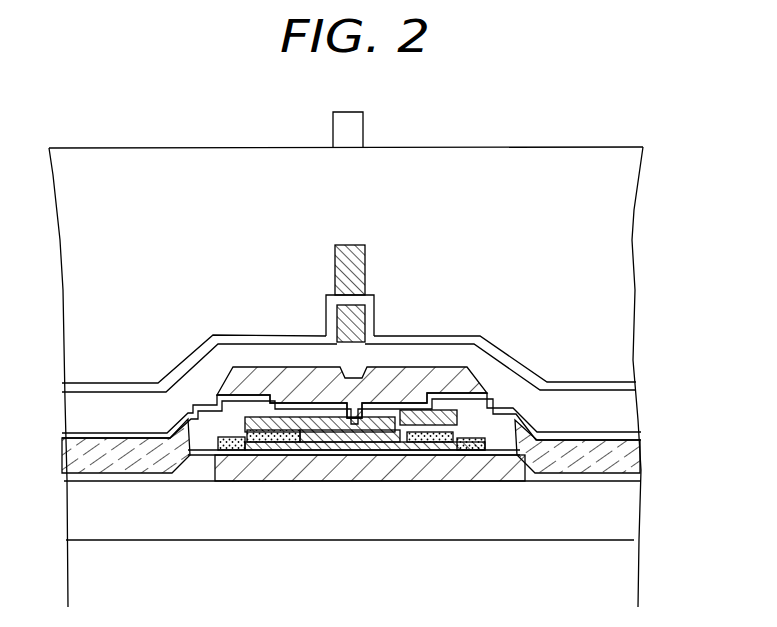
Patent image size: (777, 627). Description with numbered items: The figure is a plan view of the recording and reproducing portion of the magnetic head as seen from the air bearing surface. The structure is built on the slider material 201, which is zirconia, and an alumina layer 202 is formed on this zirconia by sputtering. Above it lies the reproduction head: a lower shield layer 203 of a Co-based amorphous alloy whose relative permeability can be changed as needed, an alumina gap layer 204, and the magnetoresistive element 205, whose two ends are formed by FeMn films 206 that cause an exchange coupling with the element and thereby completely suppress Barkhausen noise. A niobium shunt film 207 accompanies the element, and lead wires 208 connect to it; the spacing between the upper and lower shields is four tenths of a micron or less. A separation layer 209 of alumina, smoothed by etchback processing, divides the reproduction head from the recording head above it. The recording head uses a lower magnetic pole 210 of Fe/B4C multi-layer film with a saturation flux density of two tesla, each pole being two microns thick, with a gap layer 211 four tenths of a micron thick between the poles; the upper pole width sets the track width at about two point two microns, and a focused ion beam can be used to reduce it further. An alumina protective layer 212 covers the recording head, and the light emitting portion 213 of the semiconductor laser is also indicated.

The slider material 201 is at (623, 577).
The alumina layer 202 is at (628, 513).
The lower shield layer 203 is at (392, 465).
The gap layer 204 is at (553, 478).
The magnetoresistive element 205 is at (318, 445).
The FeMn films 206 is at (258, 452).
The shunt film 207 is at (345, 435).
The lead wires 208 is at (133, 465).
The separation layer 209 is at (128, 403).
The lower magnetic pole 210 is at (365, 322).
The gap layer 211 is at (372, 305).
The alumina protective layer 212 is at (622, 267).
The light emitting portion 213 is at (333, 125).